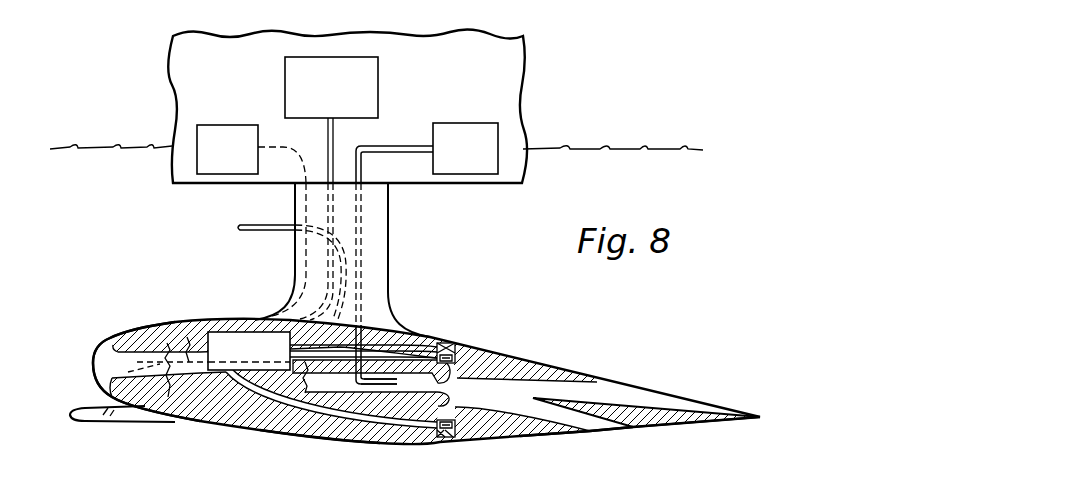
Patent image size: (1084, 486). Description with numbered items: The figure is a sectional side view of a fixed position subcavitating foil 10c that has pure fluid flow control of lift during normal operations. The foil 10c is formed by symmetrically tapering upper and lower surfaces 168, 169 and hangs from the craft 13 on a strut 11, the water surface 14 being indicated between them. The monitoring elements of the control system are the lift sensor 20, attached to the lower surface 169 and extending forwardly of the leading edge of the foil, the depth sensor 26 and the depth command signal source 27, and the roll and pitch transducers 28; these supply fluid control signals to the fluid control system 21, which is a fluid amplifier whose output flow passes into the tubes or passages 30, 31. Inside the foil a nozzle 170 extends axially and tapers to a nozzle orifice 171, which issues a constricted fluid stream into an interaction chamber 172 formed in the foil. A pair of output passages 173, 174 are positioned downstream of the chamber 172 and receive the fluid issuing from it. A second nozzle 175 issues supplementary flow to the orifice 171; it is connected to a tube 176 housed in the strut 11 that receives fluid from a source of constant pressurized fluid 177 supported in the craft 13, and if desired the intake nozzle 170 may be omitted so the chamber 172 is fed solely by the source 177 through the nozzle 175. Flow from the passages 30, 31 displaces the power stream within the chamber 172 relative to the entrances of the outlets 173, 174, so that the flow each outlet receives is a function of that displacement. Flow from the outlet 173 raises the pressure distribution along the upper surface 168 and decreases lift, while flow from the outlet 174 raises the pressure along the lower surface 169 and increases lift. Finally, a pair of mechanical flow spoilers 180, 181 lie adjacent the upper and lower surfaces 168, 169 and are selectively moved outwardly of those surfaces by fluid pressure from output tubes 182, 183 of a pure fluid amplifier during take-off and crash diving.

The foil 10c is at (510, 332).
The strut 11 is at (388, 231).
The craft 13 is at (487, 185).
The water surface 14 is at (670, 133).
The lift sensor 20 is at (83, 419).
The fluid control system 21 is at (249, 351).
The depth sensor 26 is at (247, 226).
The depth command signal source 27 is at (331, 188).
The roll and pitch transducers 28 is at (251, 221).
The tube or passage 30 is at (294, 437).
The tube or passage 31 is at (318, 371).
The upper surface 168 is at (175, 322).
The lower surface 169 is at (177, 422).
The nozzle 170 is at (100, 347).
The nozzle orifice 171 is at (440, 389).
The interaction chamber 172 is at (492, 394).
The output passage 173 is at (610, 380).
The output passage 174 is at (597, 431).
The nozzle 175 is at (381, 380).
The tube 176 is at (397, 145).
The source of constant pressurized fluid 177 is at (465, 148).
The mechanical flow spoiler 180 is at (452, 340).
The mechanical flow spoiler 181 is at (440, 438).
The output tube 182 is at (373, 345).
The output tube 183 is at (348, 441).